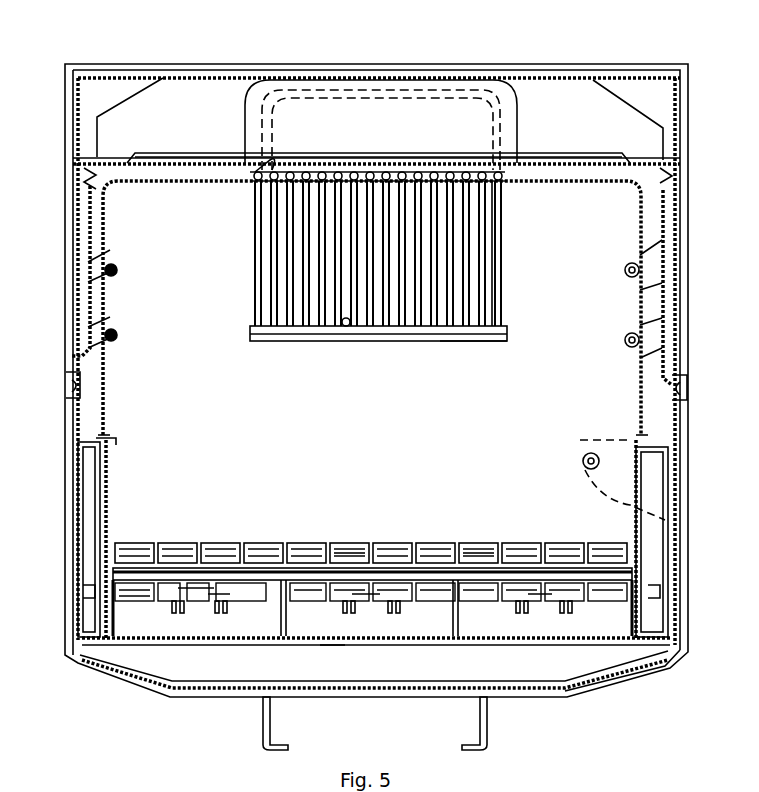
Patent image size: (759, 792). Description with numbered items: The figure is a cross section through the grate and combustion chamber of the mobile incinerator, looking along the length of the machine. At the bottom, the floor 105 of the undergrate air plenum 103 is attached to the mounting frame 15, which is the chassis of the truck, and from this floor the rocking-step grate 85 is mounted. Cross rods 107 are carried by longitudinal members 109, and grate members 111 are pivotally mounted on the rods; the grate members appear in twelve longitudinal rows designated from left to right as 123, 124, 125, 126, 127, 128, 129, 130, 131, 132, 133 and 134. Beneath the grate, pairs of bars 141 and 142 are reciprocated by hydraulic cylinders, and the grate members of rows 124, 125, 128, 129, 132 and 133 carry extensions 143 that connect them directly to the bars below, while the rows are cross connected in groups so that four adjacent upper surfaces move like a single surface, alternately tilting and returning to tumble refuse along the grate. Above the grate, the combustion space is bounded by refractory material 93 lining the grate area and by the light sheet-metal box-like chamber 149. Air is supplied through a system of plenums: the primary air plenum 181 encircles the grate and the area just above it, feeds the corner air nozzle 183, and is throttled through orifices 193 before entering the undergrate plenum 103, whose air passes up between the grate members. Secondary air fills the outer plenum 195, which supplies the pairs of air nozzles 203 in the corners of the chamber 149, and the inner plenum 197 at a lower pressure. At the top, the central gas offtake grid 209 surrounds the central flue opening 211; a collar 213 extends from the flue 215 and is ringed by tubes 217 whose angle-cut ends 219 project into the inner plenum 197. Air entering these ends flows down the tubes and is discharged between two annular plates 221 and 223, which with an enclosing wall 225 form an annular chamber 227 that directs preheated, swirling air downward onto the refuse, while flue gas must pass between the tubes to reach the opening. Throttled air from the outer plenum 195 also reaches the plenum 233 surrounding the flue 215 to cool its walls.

The mounting frame 15 is at (270, 720).
The rocking-step grate 85 is at (352, 543).
The refractory material 93 is at (110, 470).
The undergrate air plenum 103 is at (176, 636).
The floor 105 is at (320, 640).
The cross rod 107 is at (182, 570).
The longitudinal member 109 is at (287, 610).
The grate member 111 is at (480, 553).
The longitudinal row 123 is at (150, 543).
The longitudinal row 124 is at (172, 543).
The longitudinal row 125 is at (220, 543).
The longitudinal row 126 is at (262, 543).
The longitudinal row 127 is at (303, 543).
The longitudinal row 128 is at (347, 543).
The longitudinal row 129 is at (395, 543).
The longitudinal row 130 is at (445, 543).
The longitudinal row 131 is at (468, 543).
The longitudinal row 132 is at (522, 543).
The longitudinal row 133 is at (565, 543).
The longitudinal row 134 is at (605, 543).
The bar 141 is at (172, 612).
The bar 142 is at (184, 613).
The extension 143 is at (190, 594).
The box-like chamber 149 is at (105, 386).
The plenum 181 is at (80, 528).
The air nozzle 183 is at (582, 445).
The orifice 193 is at (82, 590).
The outer plenum 195 is at (80, 322).
The inner plenum 197 is at (178, 185).
The air nozzle 203 is at (112, 333).
The central gas offtake grid 209 is at (250, 293).
The central flue opening 211 is at (264, 172).
The collar 213 is at (505, 180).
The flue 215 is at (268, 120).
The tube 217 is at (503, 293).
The tube end 219 is at (258, 177).
The annular plate 221 is at (352, 325).
The annular plate 223 is at (285, 342).
The wall 225 is at (508, 336).
The annular chamber 227 is at (452, 347).
The plenum 233 is at (517, 124).